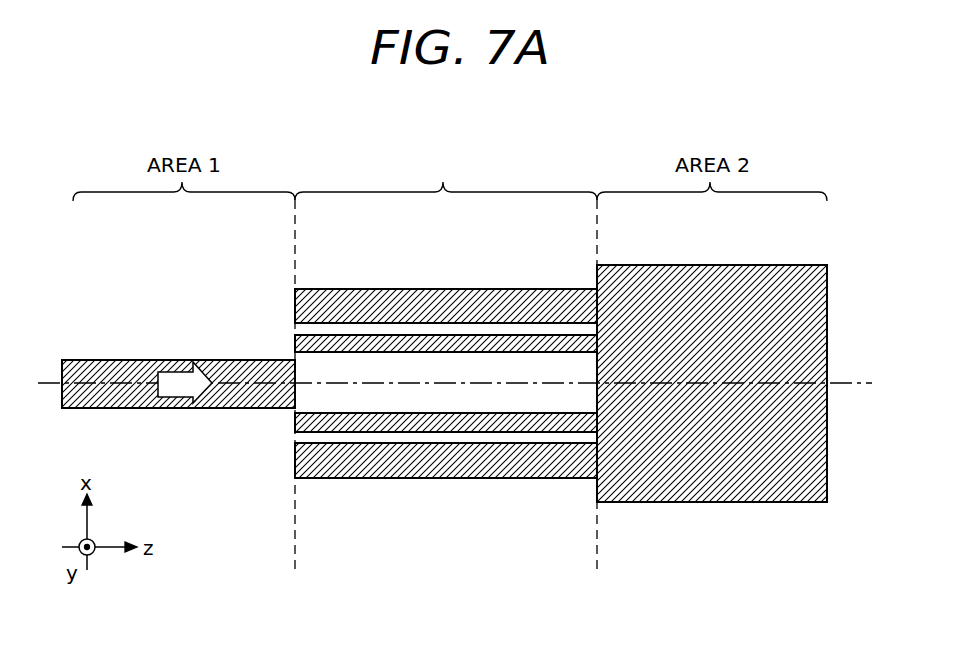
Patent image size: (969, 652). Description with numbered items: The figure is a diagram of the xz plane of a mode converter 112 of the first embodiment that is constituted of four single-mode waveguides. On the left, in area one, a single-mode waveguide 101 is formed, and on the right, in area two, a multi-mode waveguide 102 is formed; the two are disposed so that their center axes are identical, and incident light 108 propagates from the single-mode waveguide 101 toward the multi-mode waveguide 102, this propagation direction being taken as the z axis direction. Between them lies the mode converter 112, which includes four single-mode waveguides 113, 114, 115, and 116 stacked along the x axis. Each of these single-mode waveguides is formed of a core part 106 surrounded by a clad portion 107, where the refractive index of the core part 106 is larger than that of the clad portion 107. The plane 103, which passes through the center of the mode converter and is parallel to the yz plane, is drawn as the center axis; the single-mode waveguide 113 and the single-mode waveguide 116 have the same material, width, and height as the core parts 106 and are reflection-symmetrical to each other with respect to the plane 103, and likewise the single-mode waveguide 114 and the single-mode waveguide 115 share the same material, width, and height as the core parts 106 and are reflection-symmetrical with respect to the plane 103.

The single-mode waveguide 101 is at (120, 360).
The multi-mode waveguide 102 is at (732, 265).
The plane 103 is at (845, 384).
The core part 106 is at (479, 499).
The clad portion 107 is at (330, 520).
The incident light 108 is at (178, 406).
The mode converter 112 is at (479, 340).
The single-mode waveguide 113 is at (400, 288).
The single-mode waveguide 114 is at (470, 345).
The single-mode waveguide 115 is at (467, 430).
The single-mode waveguide 116 is at (400, 479).